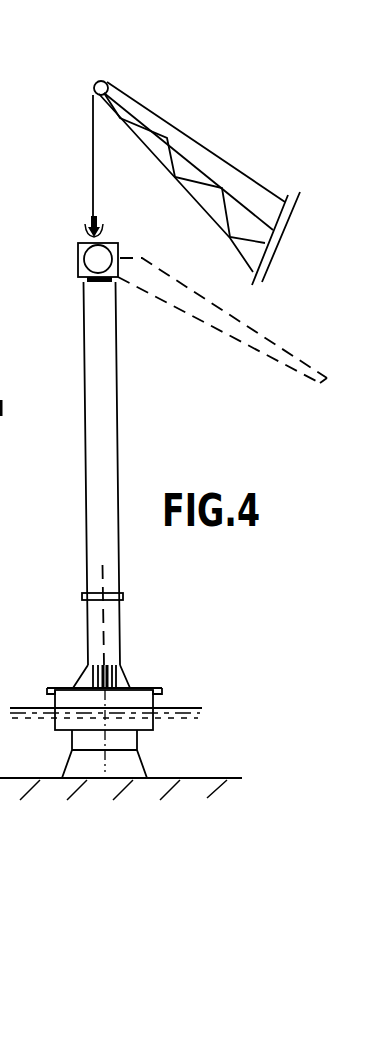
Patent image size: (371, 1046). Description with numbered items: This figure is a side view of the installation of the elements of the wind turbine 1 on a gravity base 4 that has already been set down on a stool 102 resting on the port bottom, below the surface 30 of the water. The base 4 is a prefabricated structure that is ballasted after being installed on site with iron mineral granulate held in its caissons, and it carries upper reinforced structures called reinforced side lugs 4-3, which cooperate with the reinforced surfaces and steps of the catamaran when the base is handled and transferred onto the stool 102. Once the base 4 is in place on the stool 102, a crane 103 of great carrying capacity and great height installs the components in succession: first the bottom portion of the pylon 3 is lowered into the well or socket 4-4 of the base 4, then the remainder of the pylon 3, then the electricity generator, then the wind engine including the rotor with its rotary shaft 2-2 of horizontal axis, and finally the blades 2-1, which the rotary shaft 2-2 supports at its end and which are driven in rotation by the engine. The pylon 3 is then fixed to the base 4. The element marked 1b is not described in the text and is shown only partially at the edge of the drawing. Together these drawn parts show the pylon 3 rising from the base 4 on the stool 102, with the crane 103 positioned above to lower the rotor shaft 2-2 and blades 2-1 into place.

The crane 103 is at (198, 143).
The rotary shaft 2-2 is at (108, 243).
The blades 2-1 is at (178, 302).
The wind turbine 1 is at (150, 442).
The tower section 1b is at (15, 407).
The pylon 3 is at (105, 555).
The well or socket 4-4 is at (110, 618).
The gravity base 4 is at (170, 668).
The reinforced side lugs 4-3 is at (46, 688).
The surface of the water 30 is at (185, 708).
The stool 102 is at (145, 768).